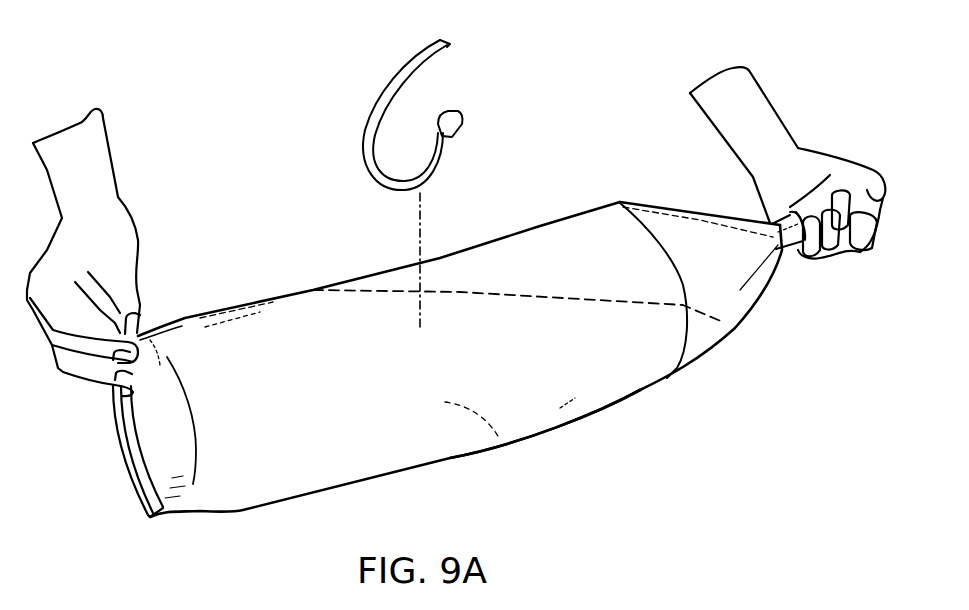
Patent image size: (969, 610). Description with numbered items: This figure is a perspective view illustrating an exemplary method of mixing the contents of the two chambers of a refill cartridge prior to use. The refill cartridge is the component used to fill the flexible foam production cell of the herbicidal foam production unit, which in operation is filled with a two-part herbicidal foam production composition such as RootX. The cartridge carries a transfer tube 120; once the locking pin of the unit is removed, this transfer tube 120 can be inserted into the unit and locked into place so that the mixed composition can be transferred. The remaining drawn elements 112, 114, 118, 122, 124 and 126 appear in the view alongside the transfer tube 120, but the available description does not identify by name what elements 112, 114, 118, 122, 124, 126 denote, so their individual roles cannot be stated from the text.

The bag rim / lip 112 is at (138, 447).
The bag body 114 is at (322, 325).
The bag neck 118 is at (777, 217).
The transfer tube 120 is at (873, 170).
The bottom seal edge 122 is at (527, 433).
The closure ring 124 is at (377, 93).
The bottom seal edge 126 is at (545, 424).